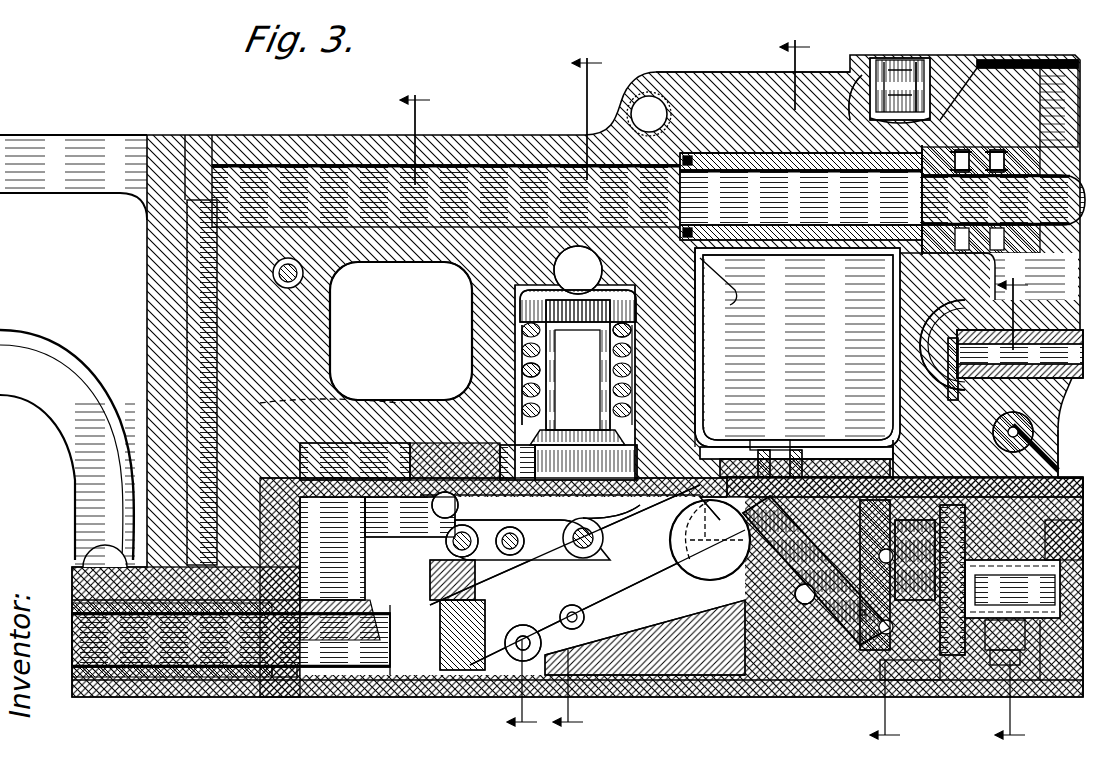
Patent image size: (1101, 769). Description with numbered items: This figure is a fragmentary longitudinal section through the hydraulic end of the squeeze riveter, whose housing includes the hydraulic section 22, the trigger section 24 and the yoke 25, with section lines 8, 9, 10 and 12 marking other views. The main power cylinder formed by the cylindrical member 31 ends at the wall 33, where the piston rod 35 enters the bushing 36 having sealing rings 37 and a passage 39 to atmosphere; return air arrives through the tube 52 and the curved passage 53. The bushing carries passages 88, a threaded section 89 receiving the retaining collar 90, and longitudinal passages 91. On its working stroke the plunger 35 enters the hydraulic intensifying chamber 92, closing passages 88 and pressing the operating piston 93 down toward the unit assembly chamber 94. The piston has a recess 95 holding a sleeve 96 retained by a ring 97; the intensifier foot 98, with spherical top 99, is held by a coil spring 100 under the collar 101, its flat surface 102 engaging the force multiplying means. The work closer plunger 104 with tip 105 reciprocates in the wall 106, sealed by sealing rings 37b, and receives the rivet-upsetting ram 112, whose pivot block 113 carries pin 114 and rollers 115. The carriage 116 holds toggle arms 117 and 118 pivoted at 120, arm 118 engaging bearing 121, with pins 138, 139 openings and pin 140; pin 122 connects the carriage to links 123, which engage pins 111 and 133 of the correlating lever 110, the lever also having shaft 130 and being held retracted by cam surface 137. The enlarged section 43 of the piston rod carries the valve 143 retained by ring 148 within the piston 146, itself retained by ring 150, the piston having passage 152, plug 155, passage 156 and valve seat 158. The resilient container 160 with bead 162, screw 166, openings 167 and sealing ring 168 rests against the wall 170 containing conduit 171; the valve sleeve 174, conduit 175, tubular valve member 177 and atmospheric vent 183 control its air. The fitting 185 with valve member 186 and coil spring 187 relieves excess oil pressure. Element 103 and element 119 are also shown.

The section line 8- 8 is at (795, 68).
The section line 9- 9 is at (588, 108).
The section line 10- 10 is at (413, 129).
The section line 12- 12 is at (1027, 511).
The hydraulic section 22 is at (452, 268).
The trigger section 24 is at (1040, 670).
The yoke 25 is at (38, 165).
The cylindrical member 31 is at (1045, 62).
The wall 33 is at (990, 62).
The piston rod 35 is at (996, 187).
The bushing 36 is at (762, 155).
The sealing rings 37 is at (962, 160).
The sealing rings 37b is at (310, 677).
The passage 39 is at (997, 150).
The enlarged section of piston rod 43 is at (1060, 660).
The tube 52 is at (990, 330).
The curved passage 53 is at (885, 318).
The passages 88 is at (930, 165).
The threaded section 89 is at (862, 170).
The retaining collar 90 is at (856, 262).
The longitudinal passages 91 is at (900, 243).
The hydraulic intensifying chamber 92 is at (492, 175).
The operating piston 93 is at (636, 246).
The unit assembly chamber 94 is at (330, 572).
The recess 95 is at (537, 248).
The sleeve 96 is at (528, 408).
The ring 97 is at (520, 368).
The intensifier foot 98 is at (578, 365).
The spherical top 99 is at (585, 244).
The coil spring 100 is at (630, 335).
The collar 101 is at (612, 300).
The flat surface 102 is at (600, 482).
The lower bore wall 103 is at (290, 680).
The work closer plunger 104 is at (1030, 550).
The tip 105 is at (140, 680).
The wall 106 is at (345, 482).
The correlating lever 110 is at (440, 575).
The pin 111 is at (492, 541).
The rivet-upsetting ram 112 is at (243, 645).
The pivot block 113 is at (470, 655).
The pin 114 is at (528, 662).
The rollers 115 is at (522, 652).
The carriage 116 is at (672, 665).
The toggle arm 117 is at (600, 612).
The toggle arm 118 is at (752, 592).
The plunger foot 119 is at (602, 478).
The pivotal connection 120 is at (760, 494).
The bearing 121 is at (840, 612).
The pin 122 is at (615, 555).
The links 123 is at (445, 536).
The shaft 130 is at (508, 432).
The pins 133 is at (545, 500).
The cam surface 137 is at (420, 500).
The pin 138 is at (440, 518).
The elongated openings 139 is at (782, 602).
The pin 140 is at (620, 612).
The valve 143 is at (985, 625).
The piston 146 is at (902, 672).
The retaining ring 148 is at (958, 612).
The retaining ring 150 is at (1000, 660).
The passage 152 is at (905, 685).
The threaded plug 155 is at (920, 490).
The central passage 156 is at (862, 525).
The valve seat 158 is at (932, 615).
The resilient container 160 is at (703, 372).
The bead 162 is at (870, 442).
The securing screw 166 is at (790, 442).
The openings 167 is at (765, 432).
The rubber sealing ring 168 is at (745, 442).
The wall 170 is at (1050, 476).
The conduit 171 is at (905, 452).
The sleeve 174 is at (1010, 418).
The conduit 175 is at (1035, 348).
The tubular valve member 177 is at (1005, 470).
The atmospheric vent 183 is at (1050, 450).
The fitting 185 is at (885, 62).
The valve member 186 is at (862, 75).
The coil spring 187 is at (925, 75).